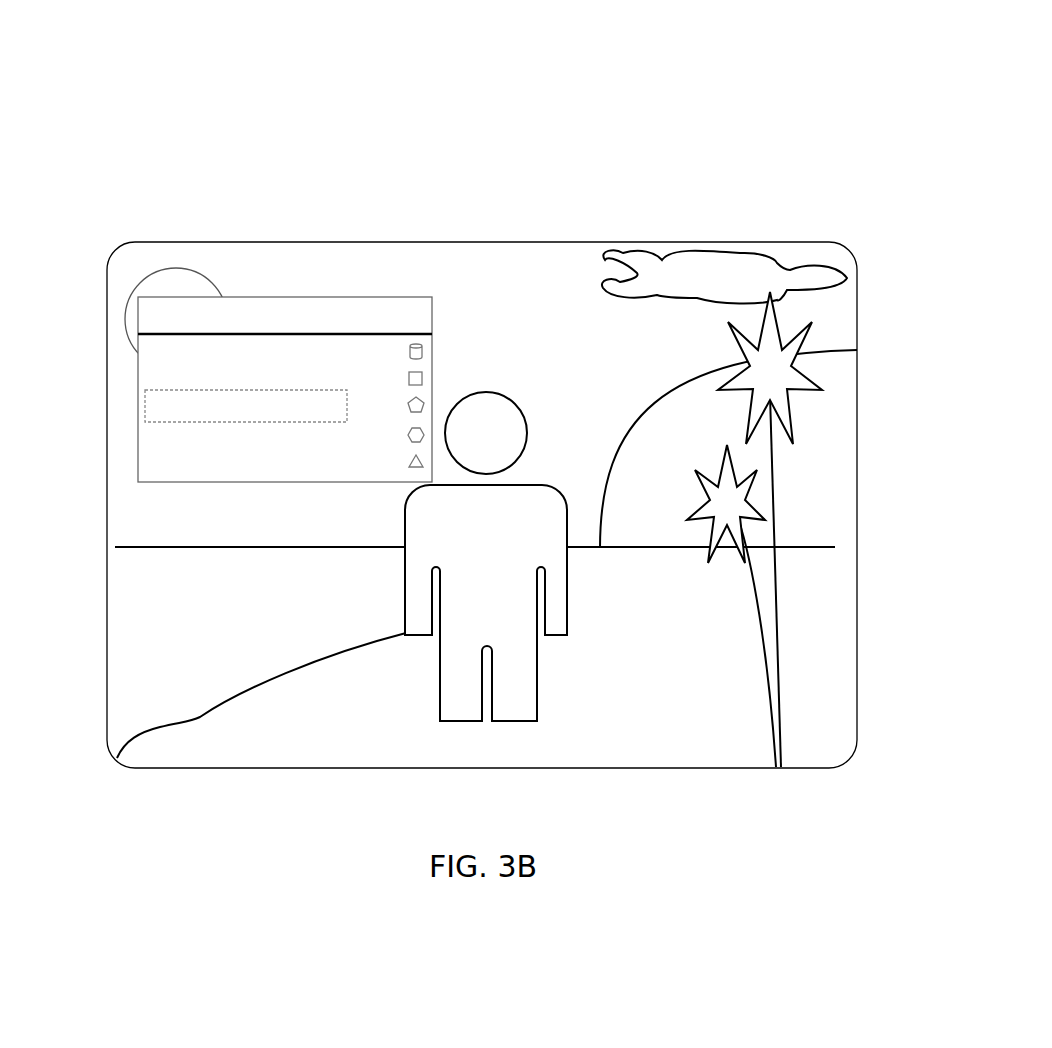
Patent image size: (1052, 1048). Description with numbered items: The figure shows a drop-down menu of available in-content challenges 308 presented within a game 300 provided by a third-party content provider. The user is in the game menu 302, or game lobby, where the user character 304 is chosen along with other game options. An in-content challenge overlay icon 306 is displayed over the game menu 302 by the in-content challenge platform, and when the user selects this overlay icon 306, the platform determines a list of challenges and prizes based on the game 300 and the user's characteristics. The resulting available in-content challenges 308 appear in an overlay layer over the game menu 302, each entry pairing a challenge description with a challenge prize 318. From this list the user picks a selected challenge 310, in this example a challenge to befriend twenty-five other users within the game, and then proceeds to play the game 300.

The game 300 is at (78, 58).
The game menu 302 is at (833, 483).
The user character 304 is at (505, 412).
The in-content challenge overlay icon 306 is at (180, 267).
The available in-content challenges 308 is at (303, 335).
The selected challenge 310 is at (147, 405).
The challenge prize 318 is at (411, 332).